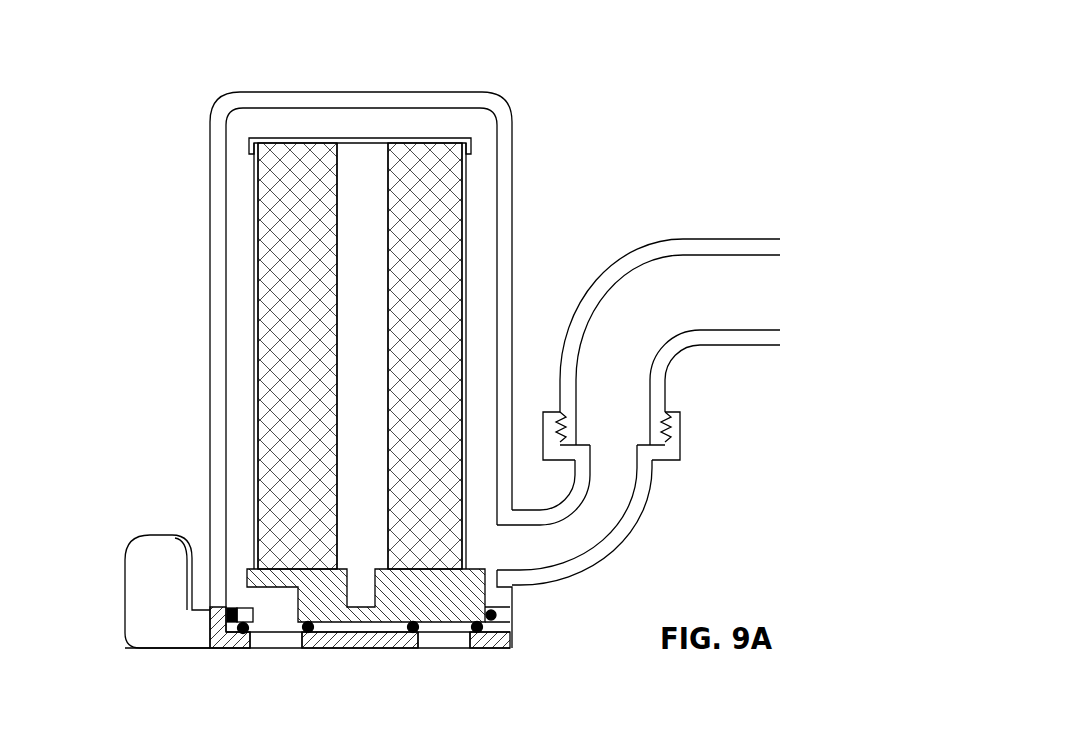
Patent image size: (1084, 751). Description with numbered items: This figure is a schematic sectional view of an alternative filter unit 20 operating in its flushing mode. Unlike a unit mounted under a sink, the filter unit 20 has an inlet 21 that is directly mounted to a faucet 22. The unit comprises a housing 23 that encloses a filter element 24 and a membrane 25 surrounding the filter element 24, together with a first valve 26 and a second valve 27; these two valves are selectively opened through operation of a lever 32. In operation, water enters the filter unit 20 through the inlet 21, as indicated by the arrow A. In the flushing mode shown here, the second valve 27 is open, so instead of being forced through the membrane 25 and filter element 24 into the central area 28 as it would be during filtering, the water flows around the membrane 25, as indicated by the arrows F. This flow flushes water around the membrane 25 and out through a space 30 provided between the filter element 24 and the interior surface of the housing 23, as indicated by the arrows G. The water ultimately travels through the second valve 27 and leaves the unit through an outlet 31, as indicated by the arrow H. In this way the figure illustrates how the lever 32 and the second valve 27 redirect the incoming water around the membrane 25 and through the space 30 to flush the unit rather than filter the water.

The filter unit 20 is at (183, 96).
The inlet 21 is at (633, 530).
The faucet 22 is at (681, 450).
The housing 23 is at (512, 156).
The filter element 24 is at (417, 154).
The membrane 25 is at (465, 300).
The first valve 26 is at (470, 649).
The second valve 27 is at (298, 608).
The central area 28 is at (362, 356).
The space 30 is at (237, 172).
The outlet 31 is at (250, 647).
The lever 32 is at (130, 647).
The arrow A is at (612, 420).
The arrows F is at (482, 242).
The arrows G is at (240, 352).
The arrow H is at (243, 596).